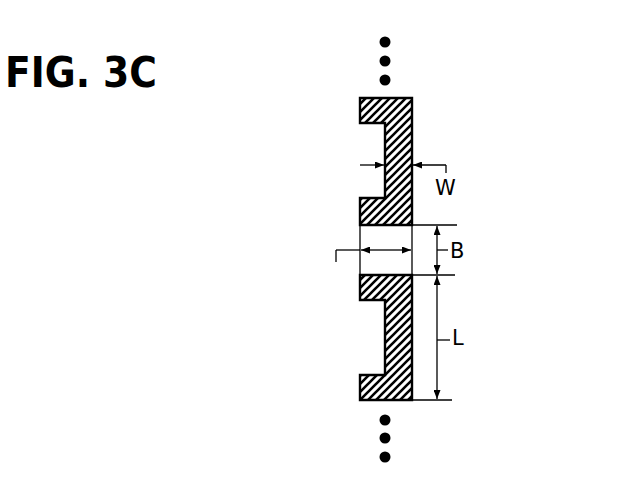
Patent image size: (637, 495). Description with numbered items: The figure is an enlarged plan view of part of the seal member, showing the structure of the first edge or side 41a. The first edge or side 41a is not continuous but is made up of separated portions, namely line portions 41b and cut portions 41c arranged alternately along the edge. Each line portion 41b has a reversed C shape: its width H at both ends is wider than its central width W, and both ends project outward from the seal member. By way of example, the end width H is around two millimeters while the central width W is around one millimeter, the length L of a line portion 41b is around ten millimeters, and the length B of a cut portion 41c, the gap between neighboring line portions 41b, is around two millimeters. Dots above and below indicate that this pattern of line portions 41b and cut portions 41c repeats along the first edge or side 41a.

The first edge or side 41a is at (282, 249).
The line portion 41b is at (351, 149).
The cut portion 41c is at (349, 237).